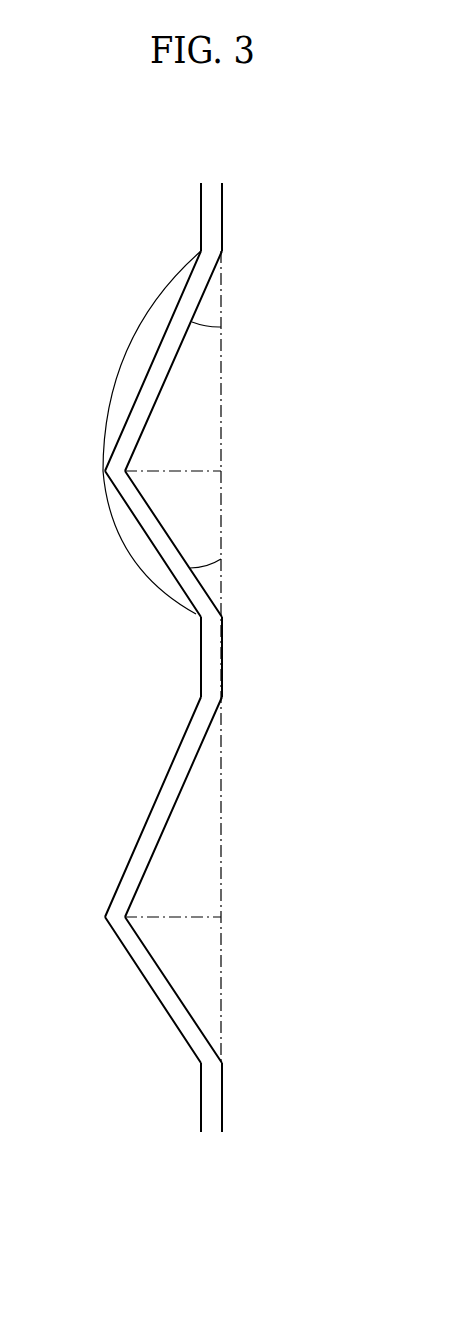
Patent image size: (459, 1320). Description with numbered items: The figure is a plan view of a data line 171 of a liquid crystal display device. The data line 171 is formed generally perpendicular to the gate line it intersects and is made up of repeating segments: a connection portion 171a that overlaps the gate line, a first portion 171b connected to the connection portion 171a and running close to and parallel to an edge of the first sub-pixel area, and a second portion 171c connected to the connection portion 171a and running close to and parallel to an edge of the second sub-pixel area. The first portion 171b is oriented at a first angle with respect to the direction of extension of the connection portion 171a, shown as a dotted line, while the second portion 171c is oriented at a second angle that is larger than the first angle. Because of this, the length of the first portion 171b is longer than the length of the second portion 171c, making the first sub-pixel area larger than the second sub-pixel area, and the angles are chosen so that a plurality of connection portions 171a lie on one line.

The data line 171 is at (217, 132).
The connection portion 171a is at (222, 217).
The first portion 171b is at (150, 418).
The second portion 171c is at (140, 493).